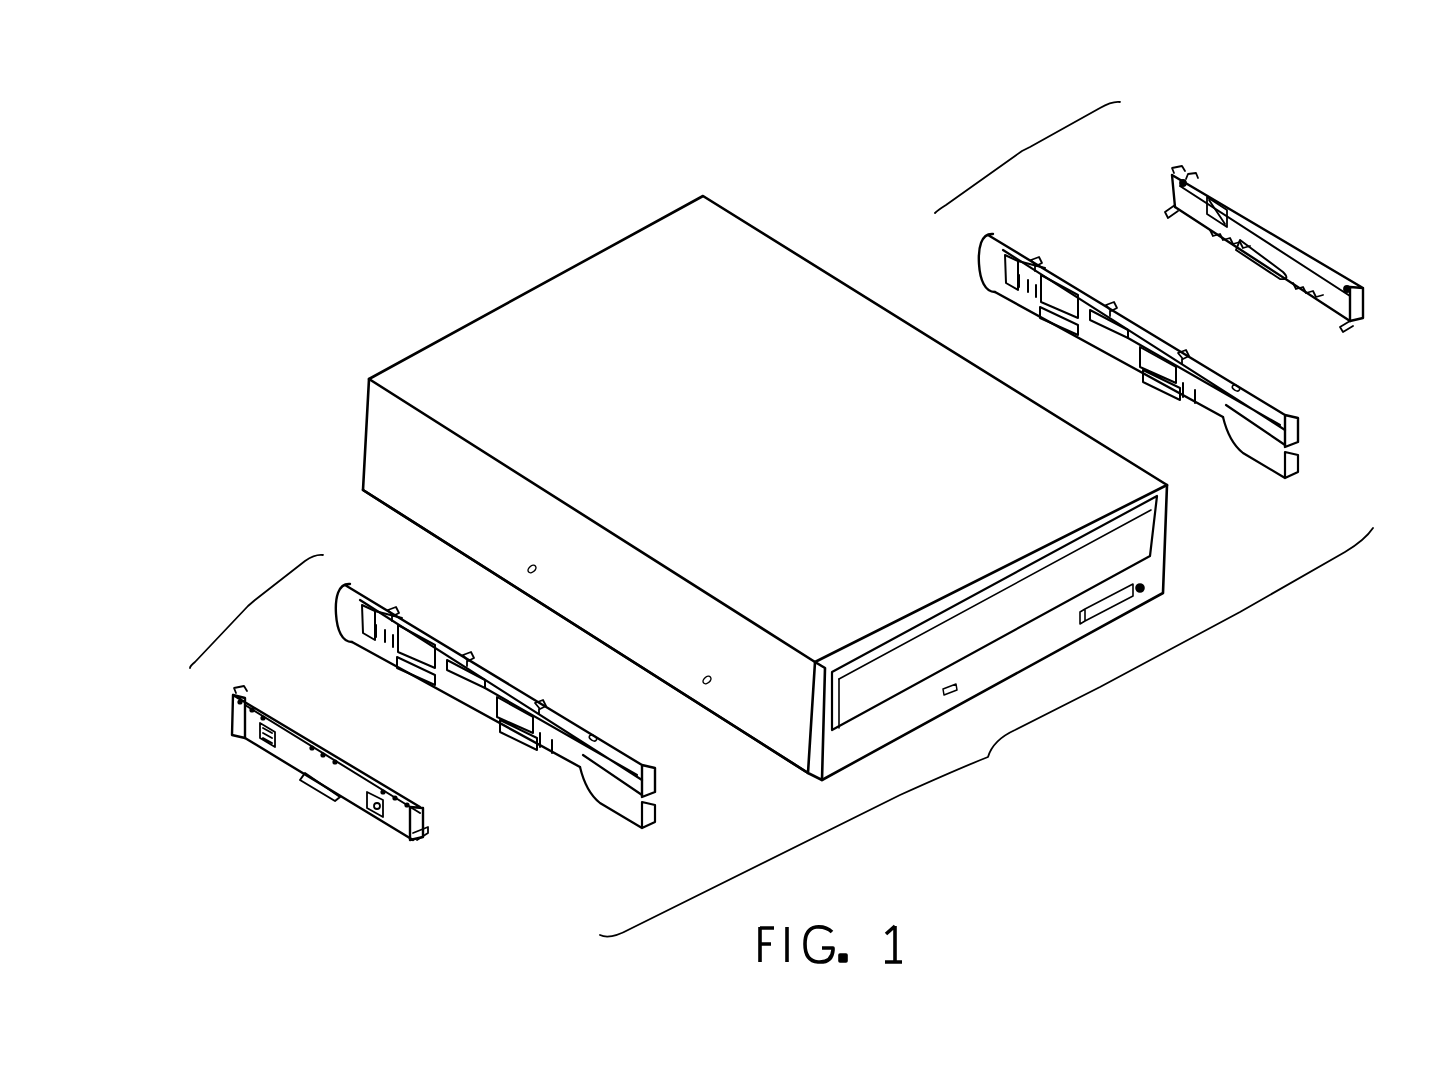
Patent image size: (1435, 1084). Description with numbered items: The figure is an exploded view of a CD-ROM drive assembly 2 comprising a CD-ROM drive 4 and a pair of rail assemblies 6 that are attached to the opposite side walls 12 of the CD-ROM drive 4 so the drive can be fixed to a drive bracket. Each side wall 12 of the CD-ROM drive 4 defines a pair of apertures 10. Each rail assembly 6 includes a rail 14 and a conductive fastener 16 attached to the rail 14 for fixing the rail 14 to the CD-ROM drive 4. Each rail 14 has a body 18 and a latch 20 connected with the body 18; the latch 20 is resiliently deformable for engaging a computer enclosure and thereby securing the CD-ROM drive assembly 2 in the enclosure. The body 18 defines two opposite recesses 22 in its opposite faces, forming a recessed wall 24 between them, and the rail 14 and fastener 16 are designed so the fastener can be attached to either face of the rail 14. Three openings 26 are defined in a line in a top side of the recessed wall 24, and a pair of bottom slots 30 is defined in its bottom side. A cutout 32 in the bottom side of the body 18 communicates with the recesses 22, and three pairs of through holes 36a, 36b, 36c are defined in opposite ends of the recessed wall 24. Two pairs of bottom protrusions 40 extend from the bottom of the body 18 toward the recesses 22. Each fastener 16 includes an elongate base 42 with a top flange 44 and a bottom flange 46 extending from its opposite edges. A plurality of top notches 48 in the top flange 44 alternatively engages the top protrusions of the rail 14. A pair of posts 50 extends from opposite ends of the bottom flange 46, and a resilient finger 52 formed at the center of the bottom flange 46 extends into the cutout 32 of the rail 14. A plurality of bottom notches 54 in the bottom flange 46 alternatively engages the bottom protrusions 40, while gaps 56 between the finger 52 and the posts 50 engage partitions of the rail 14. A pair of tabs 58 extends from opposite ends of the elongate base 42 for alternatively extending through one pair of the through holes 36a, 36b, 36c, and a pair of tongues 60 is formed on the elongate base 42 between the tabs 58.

The CD-ROM drive assembly 2 is at (986, 732).
The CD-ROM drive 4 is at (765, 503).
The rail assembly 6 is at (793, 504).
The aperture 10 is at (528, 572).
The side wall 12 is at (770, 706).
The rail 14 is at (810, 529).
The conductive fastener 16 is at (793, 514).
The body 18 is at (350, 615).
The latch 20 is at (591, 781).
The recess 22 is at (492, 692).
The recessed wall 24 is at (495, 690).
The opening 26 is at (364, 597).
The bottom slot 30 is at (421, 670).
The cutout 32 is at (486, 727).
The through hole 36a is at (362, 631).
The through hole 36b is at (370, 642).
The through hole 36c is at (390, 657).
The bottom protrusion 40 is at (553, 753).
The elongate base 42 is at (300, 761).
The top flange 44 is at (367, 779).
The bottom flange 46 is at (1190, 227).
The top notch 48 is at (233, 703).
The post 50 is at (430, 831).
The resilient finger 52 is at (316, 781).
The bottom notch 54 is at (245, 743).
The gap 56 is at (1236, 259).
The tab 58 is at (1170, 196).
The tongue 60 is at (372, 803).